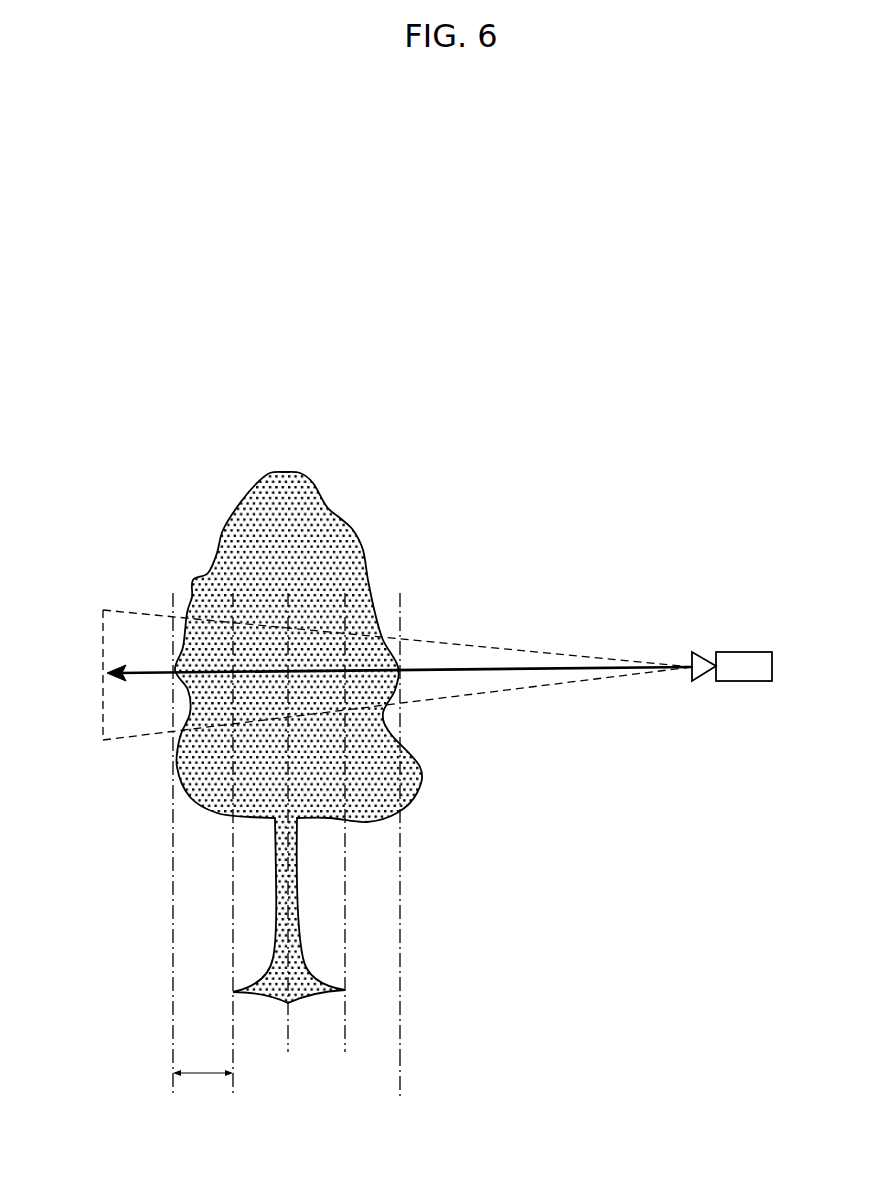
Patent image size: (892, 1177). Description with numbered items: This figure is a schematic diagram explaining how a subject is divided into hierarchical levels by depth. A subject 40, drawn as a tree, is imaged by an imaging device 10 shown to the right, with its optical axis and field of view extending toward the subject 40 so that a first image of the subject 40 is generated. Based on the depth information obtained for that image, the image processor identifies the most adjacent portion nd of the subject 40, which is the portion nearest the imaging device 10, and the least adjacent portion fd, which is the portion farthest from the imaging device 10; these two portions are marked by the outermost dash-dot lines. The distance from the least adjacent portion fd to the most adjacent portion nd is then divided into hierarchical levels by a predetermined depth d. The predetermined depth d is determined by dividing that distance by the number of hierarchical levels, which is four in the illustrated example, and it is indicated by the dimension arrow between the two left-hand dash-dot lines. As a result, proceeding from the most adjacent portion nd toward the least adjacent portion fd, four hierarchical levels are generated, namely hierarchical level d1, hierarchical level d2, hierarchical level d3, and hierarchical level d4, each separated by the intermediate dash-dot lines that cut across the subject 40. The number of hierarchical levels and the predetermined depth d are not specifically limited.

The imaging device 10 is at (743, 658).
The subject 40 is at (250, 523).
The least adjacent portion fd is at (173, 863).
The most adjacent portion nd is at (405, 1093).
The hierarchical level d1 is at (379, 822).
The hierarchical level d2 is at (324, 822).
The hierarchical level d3 is at (267, 822).
The hierarchical level d4 is at (213, 845).
The predetermined depth d is at (203, 1088).